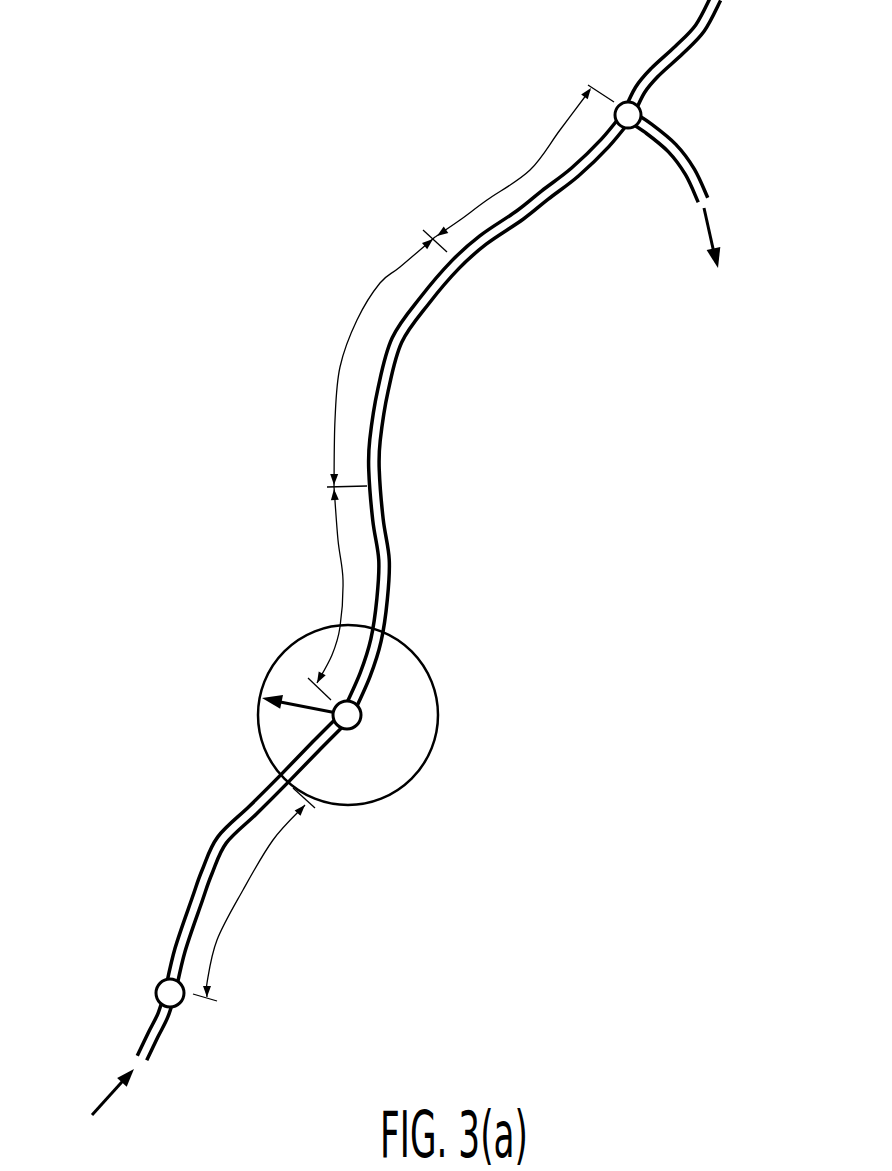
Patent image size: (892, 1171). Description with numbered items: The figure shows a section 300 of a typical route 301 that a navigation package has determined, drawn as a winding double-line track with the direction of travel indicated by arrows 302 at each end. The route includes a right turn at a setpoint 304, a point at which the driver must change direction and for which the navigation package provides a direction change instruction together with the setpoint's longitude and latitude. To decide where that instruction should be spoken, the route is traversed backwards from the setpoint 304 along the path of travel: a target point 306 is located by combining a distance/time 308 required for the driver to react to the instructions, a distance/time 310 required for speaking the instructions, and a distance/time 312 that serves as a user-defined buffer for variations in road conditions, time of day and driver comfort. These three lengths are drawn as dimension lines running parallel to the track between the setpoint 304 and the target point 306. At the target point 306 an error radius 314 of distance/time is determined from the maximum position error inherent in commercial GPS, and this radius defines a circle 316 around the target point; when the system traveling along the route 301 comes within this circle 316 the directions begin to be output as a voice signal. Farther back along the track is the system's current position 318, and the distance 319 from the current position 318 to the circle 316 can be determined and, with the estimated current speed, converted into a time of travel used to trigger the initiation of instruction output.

The section of route 300 is at (655, 492).
The route 301 is at (695, 156).
The arrows indicating direction of travel 302 is at (707, 228).
The setpoint 304 is at (634, 112).
The target point 306 is at (351, 724).
The reaction distance/time 308 is at (527, 170).
The speaking distance/time 310 is at (382, 283).
The buffer distance/time 312 is at (340, 545).
The error radius 314 is at (290, 700).
The circle 316 is at (260, 738).
The current position 318 is at (165, 992).
The distance to circle 319 is at (243, 890).